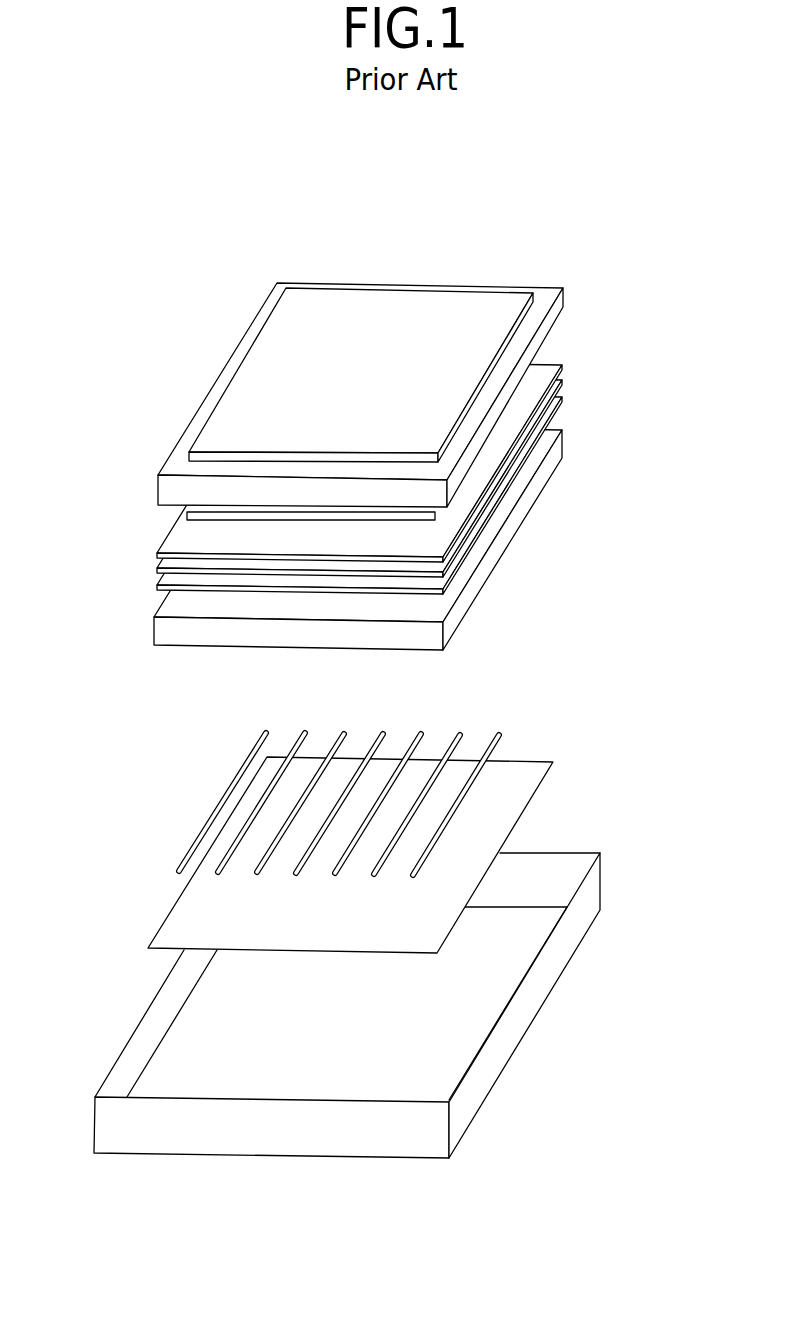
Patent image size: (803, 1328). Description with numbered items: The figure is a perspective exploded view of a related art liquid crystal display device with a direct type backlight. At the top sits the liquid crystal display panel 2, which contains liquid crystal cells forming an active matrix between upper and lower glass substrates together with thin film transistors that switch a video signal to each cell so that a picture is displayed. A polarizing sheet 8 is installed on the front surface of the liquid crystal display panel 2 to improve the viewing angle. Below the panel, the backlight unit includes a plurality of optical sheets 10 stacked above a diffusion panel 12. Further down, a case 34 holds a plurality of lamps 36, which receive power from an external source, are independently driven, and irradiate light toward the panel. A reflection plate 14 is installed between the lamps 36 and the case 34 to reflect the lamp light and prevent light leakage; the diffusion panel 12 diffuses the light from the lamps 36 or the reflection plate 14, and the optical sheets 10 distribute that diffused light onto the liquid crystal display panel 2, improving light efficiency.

The liquid crystal display panel 2 is at (555, 315).
The polarizing sheet 8 is at (502, 306).
The optical sheets 10 is at (575, 358).
The diffusion panel 12 is at (483, 566).
The reflection plate 14 is at (532, 780).
The case 34 is at (592, 892).
The lamps 36 is at (490, 753).